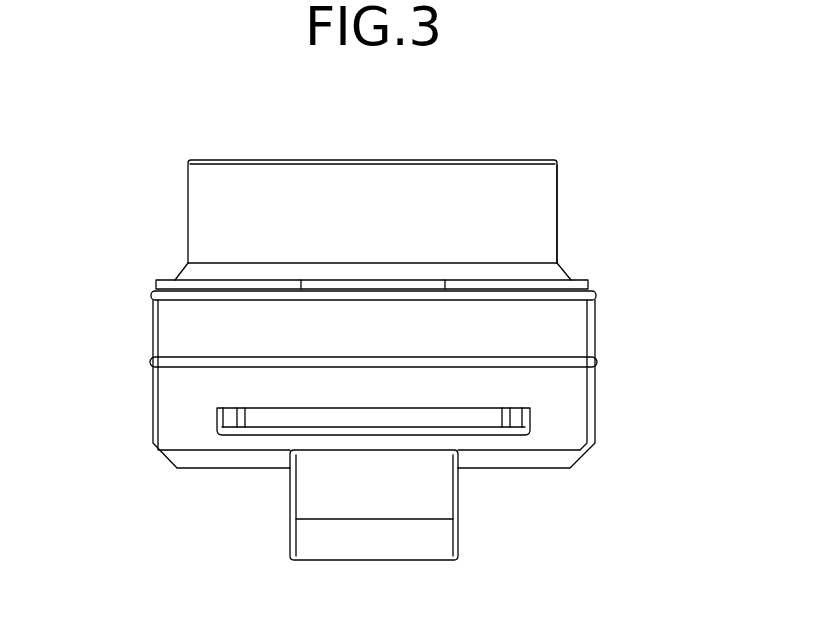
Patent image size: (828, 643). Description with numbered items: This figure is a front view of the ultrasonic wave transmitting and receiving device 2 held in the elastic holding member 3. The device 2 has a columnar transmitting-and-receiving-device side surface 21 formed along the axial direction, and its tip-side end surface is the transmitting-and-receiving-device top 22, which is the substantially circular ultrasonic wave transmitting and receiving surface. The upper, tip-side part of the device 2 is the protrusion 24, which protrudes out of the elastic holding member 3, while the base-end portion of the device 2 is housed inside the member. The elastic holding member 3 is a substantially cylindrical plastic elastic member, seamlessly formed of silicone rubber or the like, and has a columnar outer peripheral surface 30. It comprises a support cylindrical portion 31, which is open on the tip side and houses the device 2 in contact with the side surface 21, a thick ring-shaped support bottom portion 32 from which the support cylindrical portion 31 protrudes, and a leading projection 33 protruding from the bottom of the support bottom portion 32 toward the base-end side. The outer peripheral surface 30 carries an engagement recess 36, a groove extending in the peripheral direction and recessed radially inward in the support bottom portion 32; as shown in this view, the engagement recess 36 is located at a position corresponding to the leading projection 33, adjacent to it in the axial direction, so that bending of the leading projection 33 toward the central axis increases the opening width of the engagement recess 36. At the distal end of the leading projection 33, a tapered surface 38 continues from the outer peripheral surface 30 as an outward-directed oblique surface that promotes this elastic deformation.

The ultrasonic wave transmitting and receiving device 2 is at (192, 160).
The transmitting-and-receiving-device side surface 21 is at (558, 178).
The transmitting-and-receiving-device top 22 is at (495, 158).
The protrusion 24 is at (530, 208).
The elastic holding member 3 is at (149, 292).
The outer peripheral surface 30 is at (155, 373).
The support cylindrical portion 31 is at (573, 315).
The support bottom portion 32 is at (570, 405).
The leading projection 33 is at (455, 493).
The engagement recess 36 is at (262, 415).
The tapered surface 38 is at (383, 538).